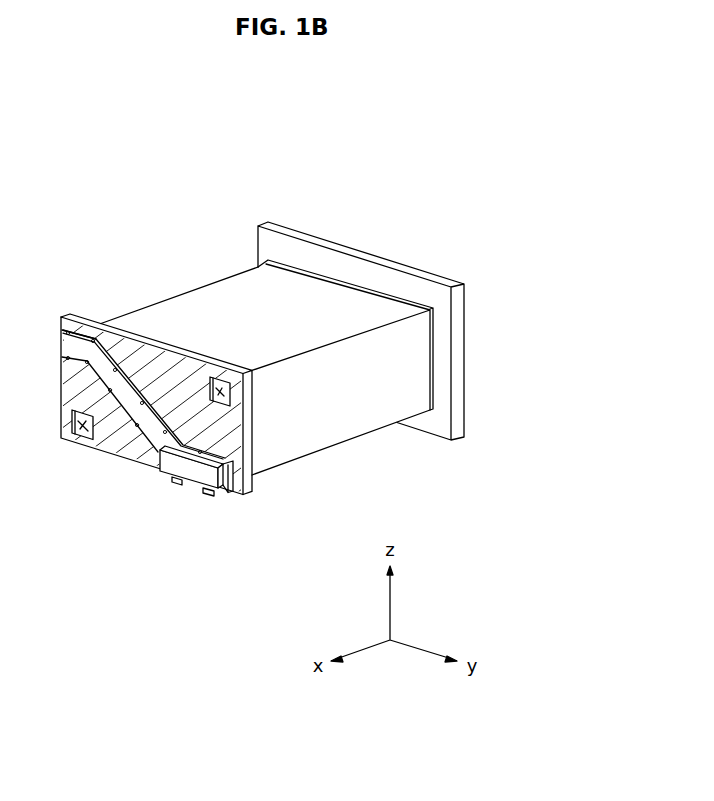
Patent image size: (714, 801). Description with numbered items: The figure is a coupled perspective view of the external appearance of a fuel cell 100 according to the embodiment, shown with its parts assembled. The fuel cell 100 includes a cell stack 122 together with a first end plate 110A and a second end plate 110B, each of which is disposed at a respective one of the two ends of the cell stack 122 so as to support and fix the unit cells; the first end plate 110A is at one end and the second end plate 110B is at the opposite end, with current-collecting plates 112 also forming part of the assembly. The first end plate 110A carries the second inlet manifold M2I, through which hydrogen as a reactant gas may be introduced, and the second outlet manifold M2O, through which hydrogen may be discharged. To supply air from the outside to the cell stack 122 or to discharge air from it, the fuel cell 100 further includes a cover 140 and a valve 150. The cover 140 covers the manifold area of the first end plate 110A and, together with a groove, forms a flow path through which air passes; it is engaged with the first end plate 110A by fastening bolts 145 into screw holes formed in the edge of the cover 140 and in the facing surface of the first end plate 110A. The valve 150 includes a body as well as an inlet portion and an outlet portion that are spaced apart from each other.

The fuel cell 100 is at (488, 140).
The first end plate 110A is at (250, 494).
The second end plate 110B is at (461, 444).
The current-collecting plates 112 is at (437, 418).
The cell stack 122 is at (320, 440).
The cover 140 is at (147, 428).
The bolts 145 is at (63, 316).
The valve 150 is at (187, 470).
The second inlet manifold M2I is at (232, 398).
The second outlet manifold M2O is at (84, 425).